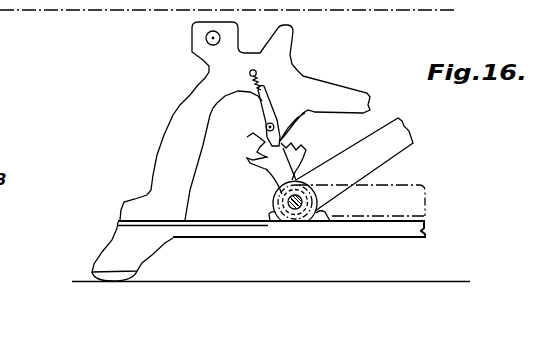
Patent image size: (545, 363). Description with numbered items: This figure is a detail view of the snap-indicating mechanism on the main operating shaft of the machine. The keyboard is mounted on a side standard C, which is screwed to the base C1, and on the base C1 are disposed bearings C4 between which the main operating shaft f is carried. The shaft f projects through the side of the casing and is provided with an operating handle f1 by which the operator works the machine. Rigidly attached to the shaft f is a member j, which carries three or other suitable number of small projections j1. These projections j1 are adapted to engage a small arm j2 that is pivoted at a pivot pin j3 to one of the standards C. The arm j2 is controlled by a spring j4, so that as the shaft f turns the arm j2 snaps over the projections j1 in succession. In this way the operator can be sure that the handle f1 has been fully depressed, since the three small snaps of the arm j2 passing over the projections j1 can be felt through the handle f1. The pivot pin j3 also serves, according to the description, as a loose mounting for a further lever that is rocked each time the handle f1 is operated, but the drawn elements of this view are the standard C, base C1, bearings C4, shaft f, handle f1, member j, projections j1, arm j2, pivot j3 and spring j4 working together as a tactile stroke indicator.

The side standard C is at (211, 121).
The base C1 is at (333, 230).
The bearing C4 is at (316, 213).
The main operating shaft f is at (288, 200).
The operating handle f1 is at (354, 164).
The member j is at (266, 170).
The small projections j1 is at (255, 146).
The small arm j2 is at (324, 109).
The pivot pin j3 is at (265, 125).
The spring j4 is at (262, 84).